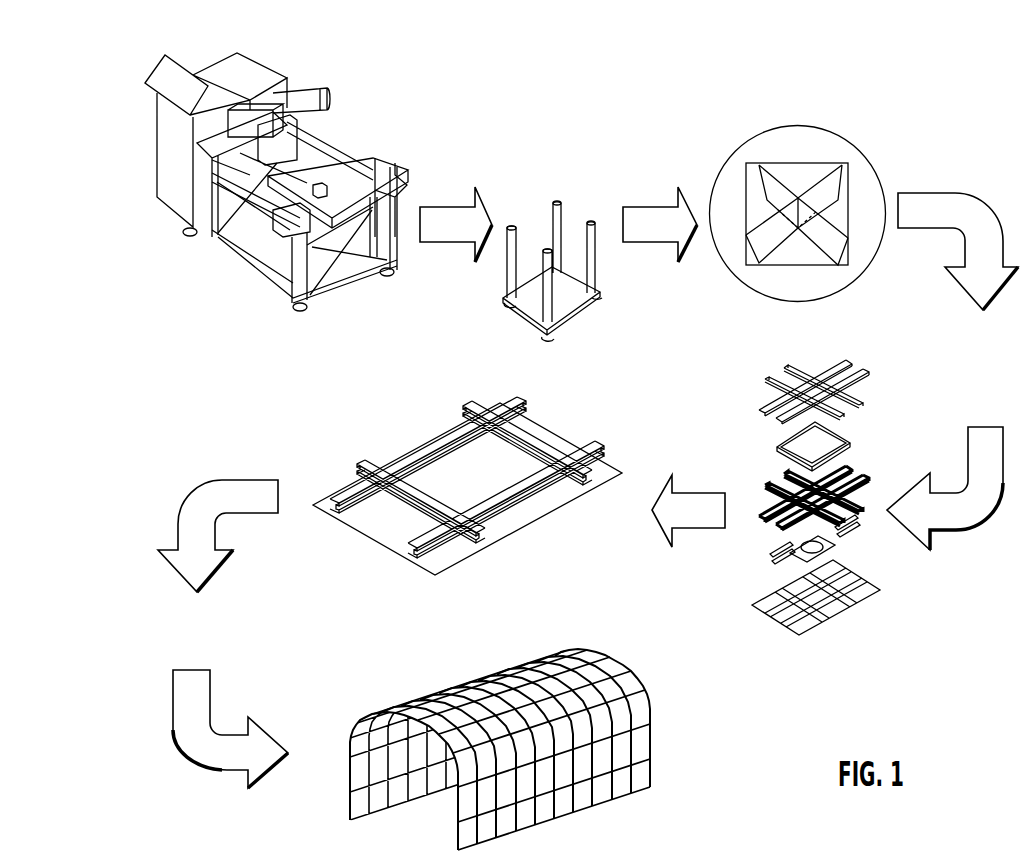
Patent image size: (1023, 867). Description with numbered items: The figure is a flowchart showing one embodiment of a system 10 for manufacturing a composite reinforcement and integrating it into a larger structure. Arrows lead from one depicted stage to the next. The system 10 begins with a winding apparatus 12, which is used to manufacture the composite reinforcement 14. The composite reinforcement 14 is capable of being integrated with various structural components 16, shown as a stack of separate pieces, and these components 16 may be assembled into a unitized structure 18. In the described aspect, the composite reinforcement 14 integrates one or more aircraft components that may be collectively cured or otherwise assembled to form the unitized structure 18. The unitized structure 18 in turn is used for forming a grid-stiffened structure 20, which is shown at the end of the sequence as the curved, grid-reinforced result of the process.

The system 10 is at (352, 142).
The winding apparatus 12 is at (574, 225).
The composite reinforcement 14 is at (845, 183).
The structural components 16 is at (868, 440).
The unitized structure 18 is at (568, 431).
The grid-stiffened structure 20 is at (670, 741).